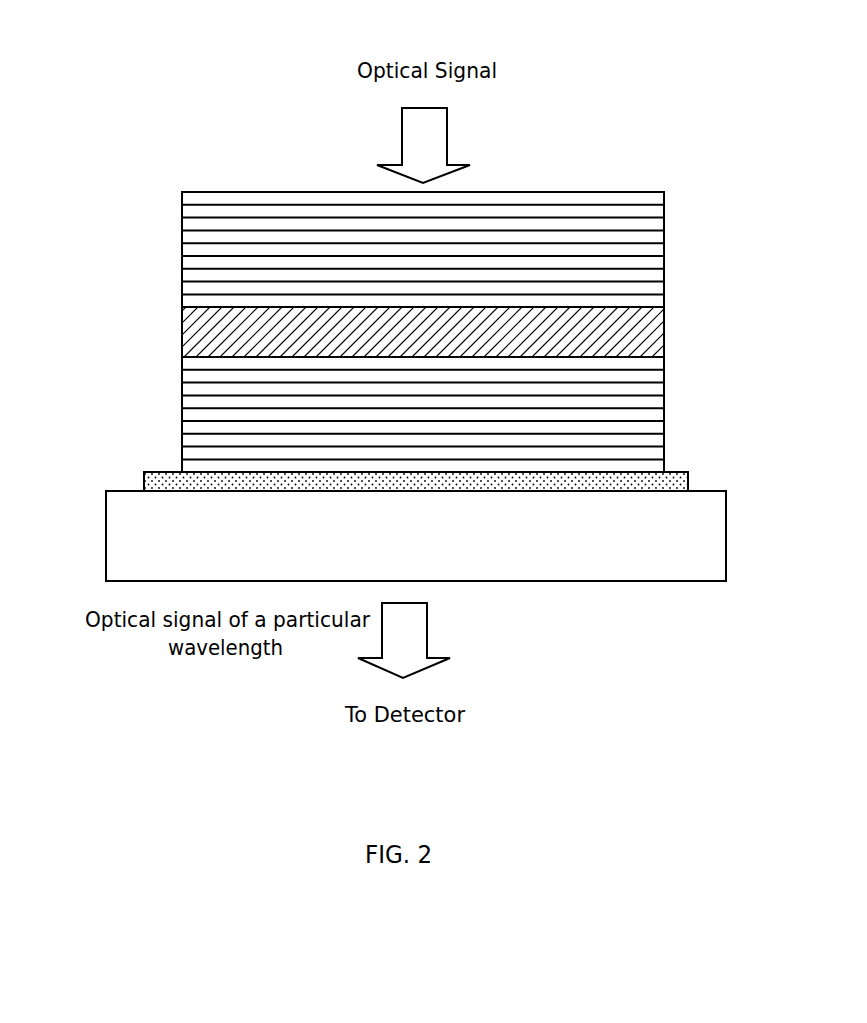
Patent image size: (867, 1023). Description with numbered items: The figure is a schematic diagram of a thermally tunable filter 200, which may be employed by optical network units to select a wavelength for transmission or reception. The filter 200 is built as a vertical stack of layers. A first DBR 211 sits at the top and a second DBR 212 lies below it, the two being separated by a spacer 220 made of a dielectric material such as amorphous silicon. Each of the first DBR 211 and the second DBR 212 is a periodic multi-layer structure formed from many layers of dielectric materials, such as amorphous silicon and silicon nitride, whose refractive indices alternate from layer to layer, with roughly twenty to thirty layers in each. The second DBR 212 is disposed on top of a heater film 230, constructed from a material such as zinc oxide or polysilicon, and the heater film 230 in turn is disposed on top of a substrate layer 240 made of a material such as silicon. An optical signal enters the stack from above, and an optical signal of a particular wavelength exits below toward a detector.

The thermally tunable filter 200 is at (132, 102).
The first DBR 211 is at (170, 192).
The second DBR 212 is at (170, 357).
The spacer 220 is at (182, 340).
The heater film 230 is at (144, 487).
The substrate layer 240 is at (106, 545).